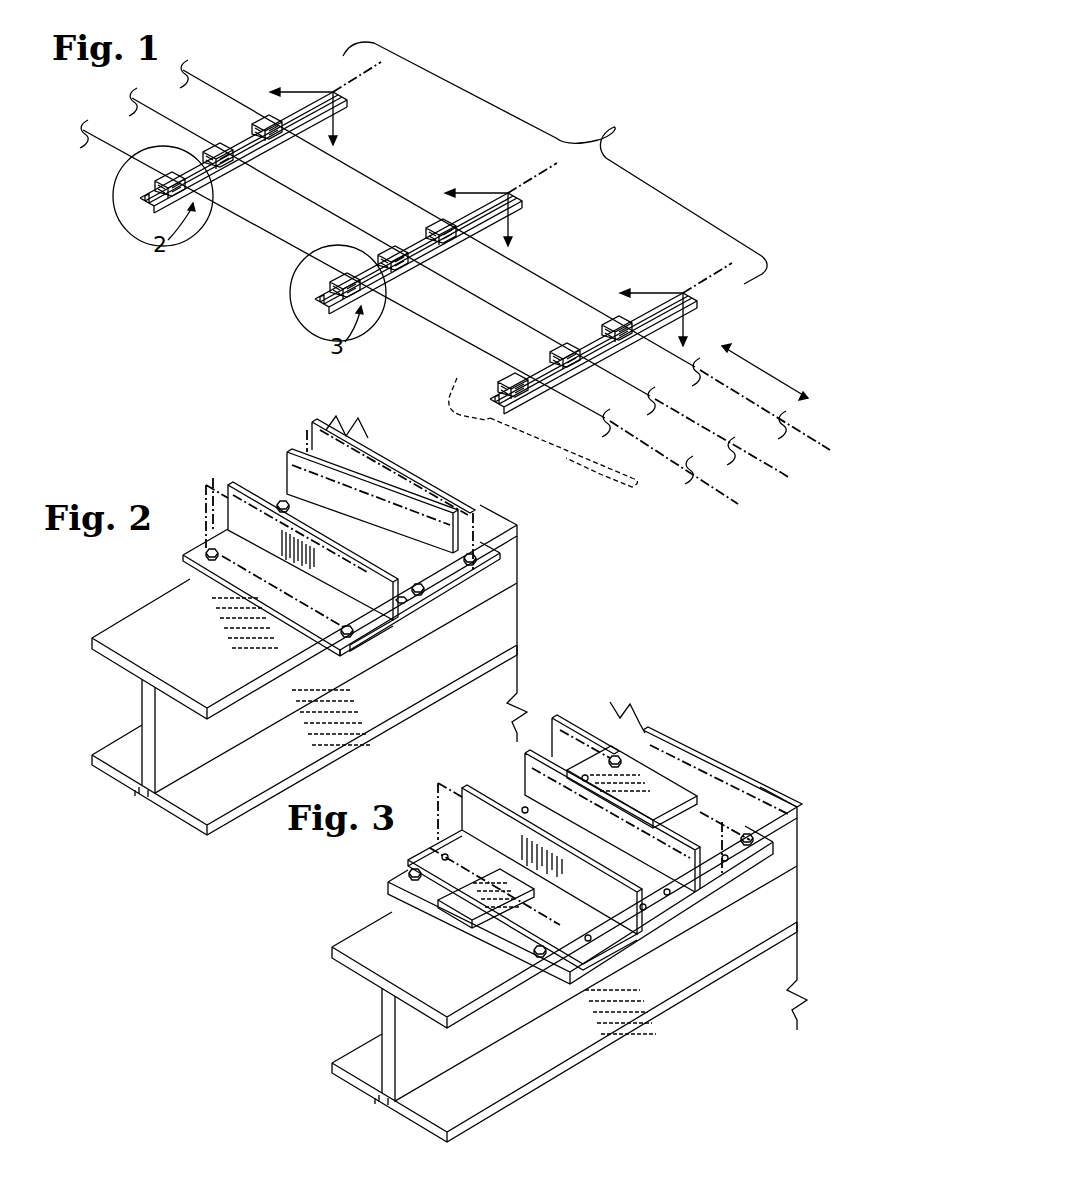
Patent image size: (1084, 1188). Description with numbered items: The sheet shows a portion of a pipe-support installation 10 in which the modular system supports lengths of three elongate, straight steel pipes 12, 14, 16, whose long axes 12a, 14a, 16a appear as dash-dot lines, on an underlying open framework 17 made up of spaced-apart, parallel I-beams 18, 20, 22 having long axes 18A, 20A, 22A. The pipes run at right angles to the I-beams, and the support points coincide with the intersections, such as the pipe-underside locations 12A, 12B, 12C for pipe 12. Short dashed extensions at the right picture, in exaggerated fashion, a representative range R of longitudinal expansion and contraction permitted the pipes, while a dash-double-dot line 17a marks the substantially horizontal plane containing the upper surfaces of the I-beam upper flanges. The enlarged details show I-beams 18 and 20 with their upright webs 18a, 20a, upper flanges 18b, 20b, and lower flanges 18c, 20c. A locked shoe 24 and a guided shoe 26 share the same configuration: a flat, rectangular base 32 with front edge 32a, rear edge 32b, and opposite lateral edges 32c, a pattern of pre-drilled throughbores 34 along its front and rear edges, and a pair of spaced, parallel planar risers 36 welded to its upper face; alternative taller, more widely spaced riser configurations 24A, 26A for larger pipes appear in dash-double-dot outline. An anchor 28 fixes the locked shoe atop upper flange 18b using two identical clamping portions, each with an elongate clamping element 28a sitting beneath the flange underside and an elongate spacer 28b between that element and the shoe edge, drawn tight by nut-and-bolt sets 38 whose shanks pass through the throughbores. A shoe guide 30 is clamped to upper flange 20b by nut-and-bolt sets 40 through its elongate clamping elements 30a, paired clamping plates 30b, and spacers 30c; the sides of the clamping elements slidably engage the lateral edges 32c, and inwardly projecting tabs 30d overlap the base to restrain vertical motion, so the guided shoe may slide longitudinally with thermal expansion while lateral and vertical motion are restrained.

In FIG. 1, the pipe-support installation 10 is at (144, 315).
In FIG. 1, the pipe 12 is at (112, 147).
In FIG. 1, the pipe 14 is at (158, 114).
In FIG. 1, the pipe 16 is at (205, 92).
In FIG. 1, the long axis 12a is at (732, 501).
In FIG. 1, the long axis 14a is at (782, 474).
In FIG. 1, the long axis 16a is at (822, 446).
In FIG. 1, the pipe-underside location 12A is at (181, 238).
In FIG. 1, the pipe-underside location 12B is at (364, 327).
In FIG. 1, the pipe-underside location 12C is at (518, 420).
In FIG. 1, the support framework 17 is at (613, 128).
In FIG. 1, the horizontal plane line 17a is at (570, 468).
In FIG. 1, the I-beam 18 is at (129, 196).
In FIG. 2, the I-beam 18 is at (281, 670).
In FIG. 1, the long axis 18A is at (352, 92).
In FIG. 2, the web 18a is at (141, 712).
In FIG. 2, the upper flange 18b is at (92, 645).
In FIG. 2, the lower flange 18c is at (92, 760).
In FIG. 1, the I-beam 20 is at (306, 296).
In FIG. 3, the I-beam 20 is at (542, 964).
In FIG. 1, the long axis 20A is at (533, 193).
In FIG. 3, the web 20a is at (381, 1018).
In FIG. 3, the upper flange 20b is at (332, 954).
In FIG. 3, the lower flange 20c is at (332, 1067).
In FIG. 1, the I-beam 22 is at (483, 395).
In FIG. 1, the long axis 22A is at (723, 267).
In FIG. 2, the locked shoe 24 is at (206, 513).
In FIG. 2, the alternative shoe configuration 24A is at (213, 478).
In FIG. 3, the guided shoe 26 is at (455, 825).
In FIG. 3, the alternative shoe configuration 26A is at (437, 793).
In FIG. 2, the anchor 28 is at (294, 589).
In FIG. 2, the clamping element 28a is at (320, 676).
In FIG. 2, the spacer 28b is at (327, 645).
In FIG. 3, the shoe guide 30 is at (590, 886).
In FIG. 3, the clamping element 30a is at (440, 882).
In FIG. 3, the clamping plate 30b is at (386, 897).
In FIG. 3, the spacer 30c is at (774, 852).
In FIG. 3, the tab 30d is at (482, 912).
In FIG. 2, the base 32 is at (345, 565).
In FIG. 3, the base 32 is at (580, 843).
In FIG. 2, the front edge 32a is at (344, 658).
In FIG. 2, the rear edge 32b is at (279, 504).
In FIG. 2, the lateral edge 32c is at (200, 552).
In FIG. 3, the throughbore 34 is at (523, 806).
In FIG. 2, the riser 36 is at (468, 566).
In FIG. 2, the nut-and-bolt set 38 is at (417, 585).
In FIG. 3, the nut-and-bolt set 40 is at (613, 760).
In FIG. 1, the range of longitudinal expansion and contraction R is at (764, 367).